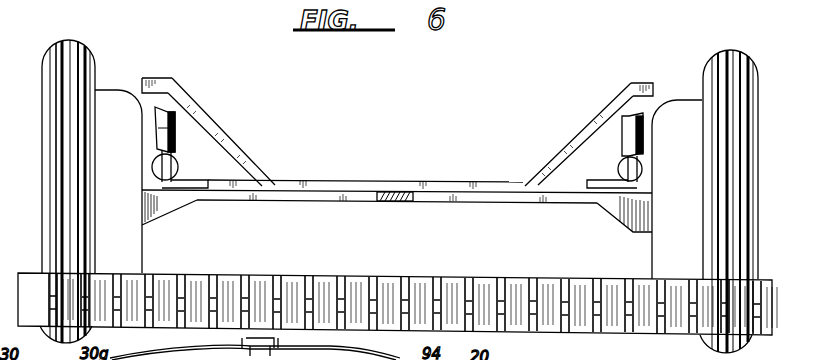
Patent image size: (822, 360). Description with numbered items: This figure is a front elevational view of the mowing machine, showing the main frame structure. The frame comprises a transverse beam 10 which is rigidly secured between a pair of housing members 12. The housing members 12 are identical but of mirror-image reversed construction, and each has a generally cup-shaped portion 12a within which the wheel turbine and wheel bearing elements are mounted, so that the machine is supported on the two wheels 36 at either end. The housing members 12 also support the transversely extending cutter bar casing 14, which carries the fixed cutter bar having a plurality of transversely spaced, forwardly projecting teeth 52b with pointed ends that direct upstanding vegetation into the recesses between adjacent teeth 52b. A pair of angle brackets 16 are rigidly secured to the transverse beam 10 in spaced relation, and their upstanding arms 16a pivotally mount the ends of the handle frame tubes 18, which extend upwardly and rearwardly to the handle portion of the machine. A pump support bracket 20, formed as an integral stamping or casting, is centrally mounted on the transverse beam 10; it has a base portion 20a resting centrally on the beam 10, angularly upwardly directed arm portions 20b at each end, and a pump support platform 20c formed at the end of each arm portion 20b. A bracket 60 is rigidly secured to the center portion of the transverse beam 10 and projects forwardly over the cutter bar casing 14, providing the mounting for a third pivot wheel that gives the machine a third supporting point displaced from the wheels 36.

The transverse beam 10 is at (273, 194).
The housing member 12 is at (112, 248).
The cup-shaped portion 12a is at (107, 107).
The cutter bar casing 14 is at (552, 279).
The angle bracket 16 is at (172, 167).
The upstanding arm 16a is at (207, 180).
The handle frame tube 18 is at (173, 128).
The pump support bracket 20 is at (348, 180).
The base portion 20a is at (493, 160).
The arm portion 20b is at (178, 102).
The pump support platform 20c is at (168, 83).
The wheel 36 is at (68, 44).
The cutter bar teeth 52b is at (398, 277).
The bracket 60 is at (393, 200).